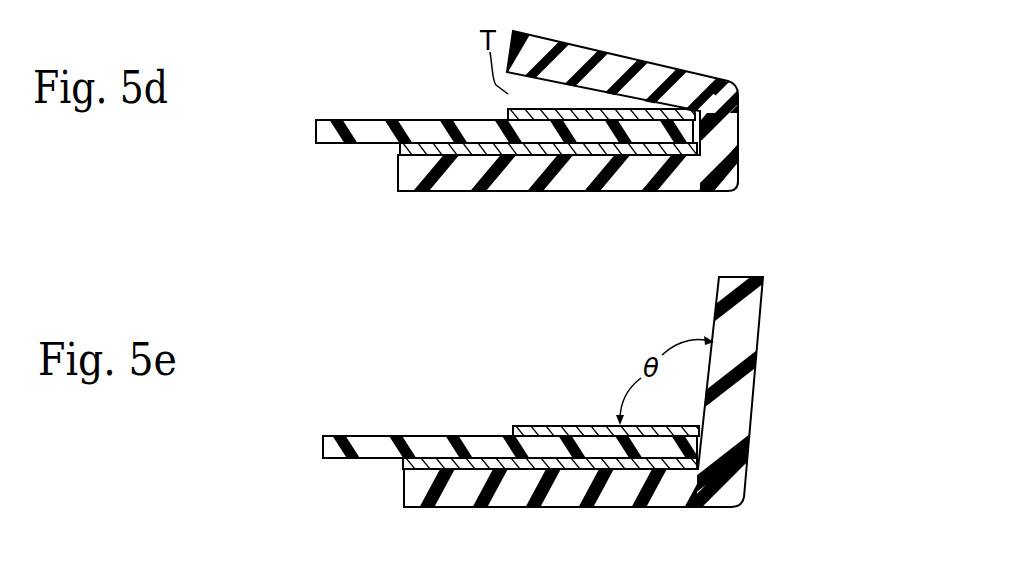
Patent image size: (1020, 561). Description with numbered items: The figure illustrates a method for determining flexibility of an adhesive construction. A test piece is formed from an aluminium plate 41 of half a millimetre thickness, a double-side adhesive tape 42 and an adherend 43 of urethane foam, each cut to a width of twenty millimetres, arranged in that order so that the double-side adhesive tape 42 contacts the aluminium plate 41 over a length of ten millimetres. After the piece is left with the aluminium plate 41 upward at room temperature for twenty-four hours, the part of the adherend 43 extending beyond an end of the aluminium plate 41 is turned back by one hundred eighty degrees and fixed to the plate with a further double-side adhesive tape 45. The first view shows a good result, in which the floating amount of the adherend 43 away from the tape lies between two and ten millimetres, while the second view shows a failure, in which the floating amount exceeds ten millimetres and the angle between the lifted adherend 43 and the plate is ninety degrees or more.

In FIG. 5d, the aluminium plate 41 is at (427, 121).
In FIG. 5e, the aluminium plate 41 is at (433, 438).
In FIG. 5d, the double-side adhesive tape 42 is at (503, 119).
In FIG. 5e, the double-side adhesive tape 42 is at (507, 430).
In FIG. 5d, the adherend 43 is at (655, 68).
In FIG. 5e, the adherend 43 is at (713, 325).
In FIG. 5d, the double-side adhesive tape 45 is at (398, 148).
In FIG. 5e, the double-side adhesive tape 45 is at (403, 465).